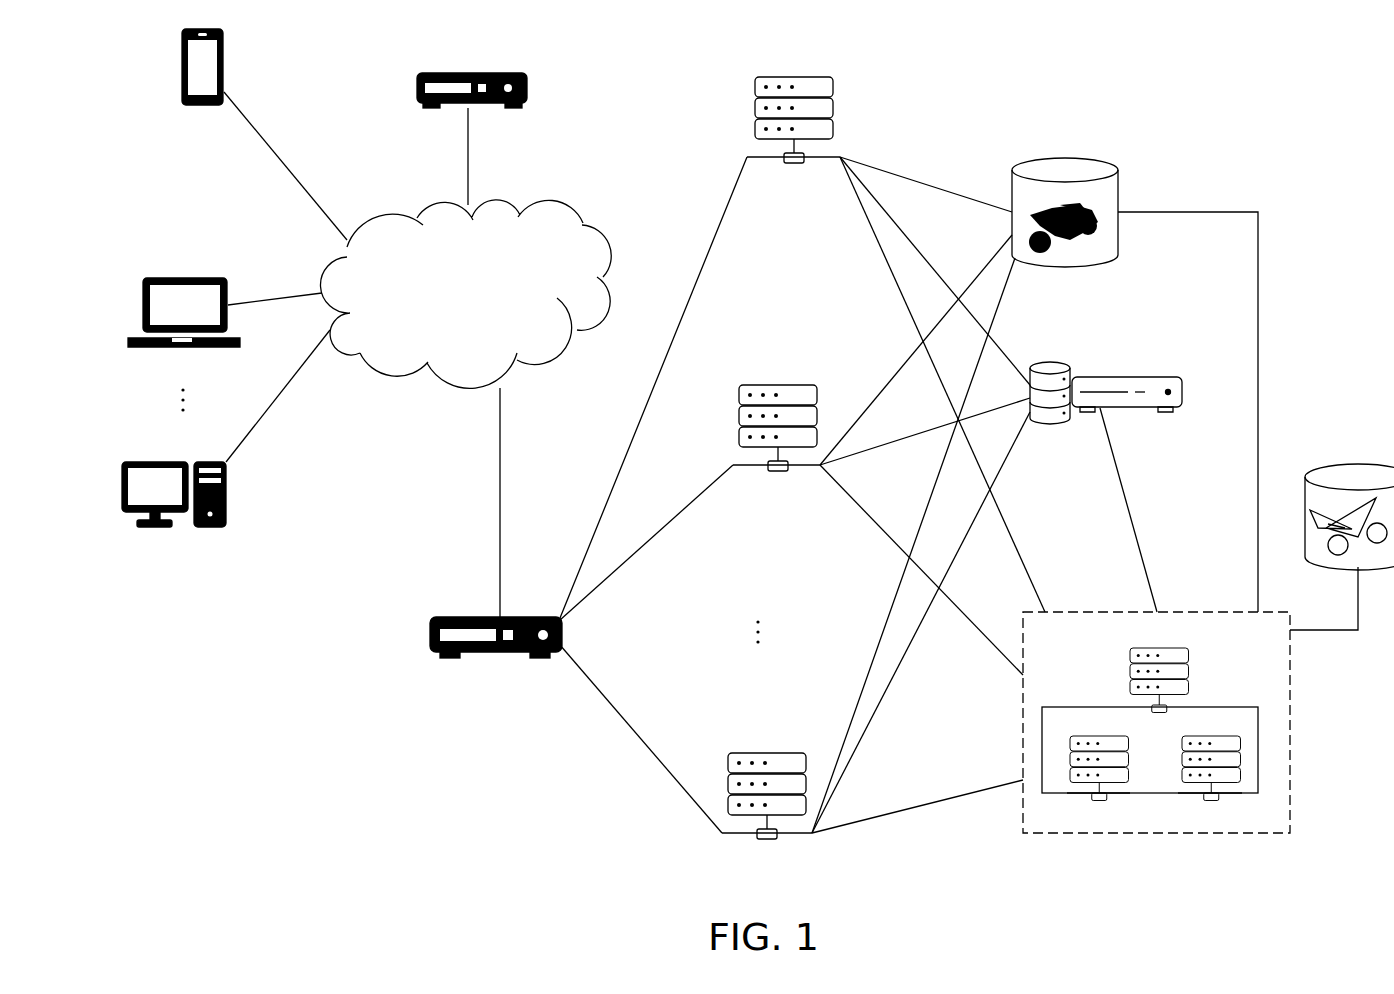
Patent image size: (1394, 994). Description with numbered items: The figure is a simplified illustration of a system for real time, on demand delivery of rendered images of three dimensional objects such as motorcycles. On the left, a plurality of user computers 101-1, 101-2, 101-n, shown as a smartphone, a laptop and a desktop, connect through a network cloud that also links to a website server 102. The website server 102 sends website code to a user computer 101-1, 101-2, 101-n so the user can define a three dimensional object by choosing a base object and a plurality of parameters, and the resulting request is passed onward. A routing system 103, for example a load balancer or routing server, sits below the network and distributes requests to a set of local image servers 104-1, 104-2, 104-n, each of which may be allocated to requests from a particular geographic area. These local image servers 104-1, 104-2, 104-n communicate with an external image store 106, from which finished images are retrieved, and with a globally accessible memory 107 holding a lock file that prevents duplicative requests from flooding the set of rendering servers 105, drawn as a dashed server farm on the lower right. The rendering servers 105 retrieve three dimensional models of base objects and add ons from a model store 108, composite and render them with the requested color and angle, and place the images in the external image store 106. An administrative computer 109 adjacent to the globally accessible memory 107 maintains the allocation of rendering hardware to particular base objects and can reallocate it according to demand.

The user computer 101-1 is at (181, 62).
The user computer 101-2 is at (142, 302).
The user computer 101-n is at (207, 528).
The website server 102 is at (505, 105).
The routing system 103 is at (483, 615).
The local image server 104-1 is at (755, 122).
The local image server 104-2 is at (752, 385).
The local image server 104-n is at (793, 753).
The set of rendering servers 105 is at (1258, 833).
The external image store 106 is at (1052, 160).
The globally accessible memory 107 is at (1042, 360).
The model store 108 is at (1375, 462).
The administrative computer 109 is at (1120, 410).